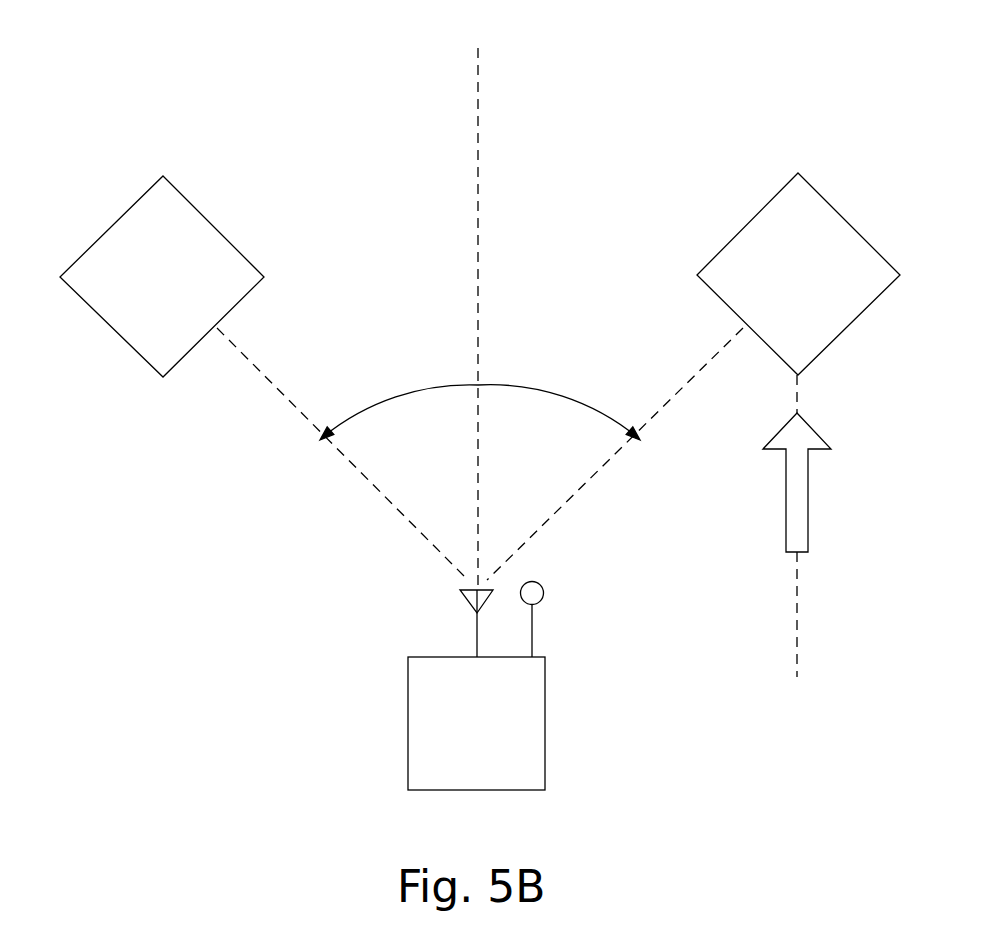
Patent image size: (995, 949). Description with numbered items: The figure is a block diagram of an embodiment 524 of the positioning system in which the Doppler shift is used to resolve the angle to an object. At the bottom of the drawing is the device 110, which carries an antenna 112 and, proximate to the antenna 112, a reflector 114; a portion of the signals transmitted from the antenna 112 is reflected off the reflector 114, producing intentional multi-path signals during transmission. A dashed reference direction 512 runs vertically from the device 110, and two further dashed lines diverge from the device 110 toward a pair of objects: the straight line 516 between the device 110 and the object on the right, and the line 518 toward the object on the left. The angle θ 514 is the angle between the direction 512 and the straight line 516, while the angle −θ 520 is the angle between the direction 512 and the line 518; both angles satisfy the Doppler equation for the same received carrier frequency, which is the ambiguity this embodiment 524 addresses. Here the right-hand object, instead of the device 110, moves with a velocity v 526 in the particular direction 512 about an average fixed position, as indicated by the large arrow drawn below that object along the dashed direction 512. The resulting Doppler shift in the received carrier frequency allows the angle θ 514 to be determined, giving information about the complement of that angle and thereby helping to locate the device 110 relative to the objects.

The embodiment 524 is at (311, 86).
The direction 512 is at (482, 220).
The line 518 is at (290, 405).
The straight line 516 is at (595, 482).
The angle −θ 520 is at (403, 388).
The angle θ 514 is at (550, 388).
The velocity v 526 is at (810, 490).
The device 110 is at (476, 723).
The antenna 112 is at (467, 606).
The reflector 114 is at (542, 593).